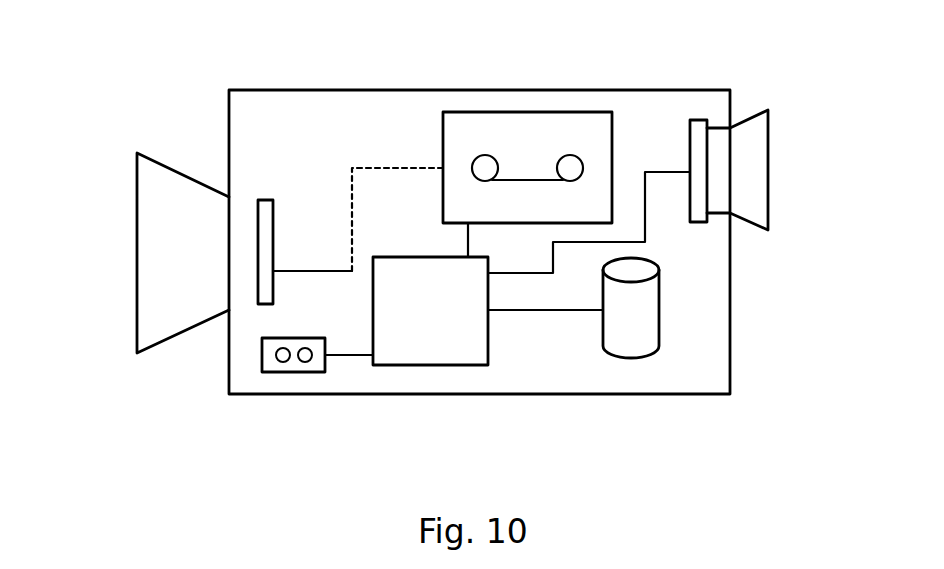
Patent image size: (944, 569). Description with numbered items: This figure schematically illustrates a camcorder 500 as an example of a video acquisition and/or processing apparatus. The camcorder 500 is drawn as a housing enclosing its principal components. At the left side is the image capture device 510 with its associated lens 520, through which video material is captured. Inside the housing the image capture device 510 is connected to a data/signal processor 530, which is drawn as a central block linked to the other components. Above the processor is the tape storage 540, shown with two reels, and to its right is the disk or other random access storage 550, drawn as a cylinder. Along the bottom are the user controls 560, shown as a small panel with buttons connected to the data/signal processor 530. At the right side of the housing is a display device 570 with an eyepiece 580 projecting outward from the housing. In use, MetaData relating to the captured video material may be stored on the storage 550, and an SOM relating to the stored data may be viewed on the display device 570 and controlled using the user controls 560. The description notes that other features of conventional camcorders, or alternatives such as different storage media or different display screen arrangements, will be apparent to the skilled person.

The camcorder 500 is at (675, 90).
The image capture device 510 is at (273, 218).
The lens 520 is at (137, 188).
The data/signal processor 530 is at (490, 350).
The tape storage 540 is at (528, 108).
The disk or other random access storage 550 is at (662, 312).
The user controls 560 is at (262, 355).
The display device 570 is at (698, 222).
The eyepiece 580 is at (768, 162).